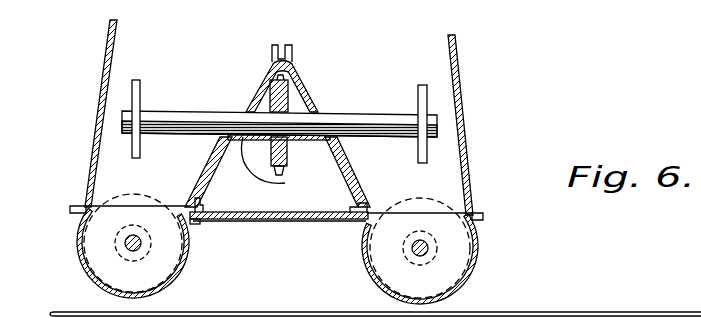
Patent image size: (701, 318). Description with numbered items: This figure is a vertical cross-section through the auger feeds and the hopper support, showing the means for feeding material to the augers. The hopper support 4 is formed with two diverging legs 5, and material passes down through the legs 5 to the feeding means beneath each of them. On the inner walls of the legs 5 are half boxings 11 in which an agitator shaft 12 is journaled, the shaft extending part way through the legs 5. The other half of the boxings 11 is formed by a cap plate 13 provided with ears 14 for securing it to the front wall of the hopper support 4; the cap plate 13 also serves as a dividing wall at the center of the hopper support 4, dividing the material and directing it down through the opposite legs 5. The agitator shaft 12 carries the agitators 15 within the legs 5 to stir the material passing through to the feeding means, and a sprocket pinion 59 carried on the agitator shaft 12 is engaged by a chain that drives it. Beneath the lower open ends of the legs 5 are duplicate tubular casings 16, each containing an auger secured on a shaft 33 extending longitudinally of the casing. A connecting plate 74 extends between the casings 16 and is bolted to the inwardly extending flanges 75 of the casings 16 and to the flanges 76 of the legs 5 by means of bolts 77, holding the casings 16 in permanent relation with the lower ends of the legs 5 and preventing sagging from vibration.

The hopper support 4 is at (135, 113).
The diverging legs 5 is at (276, 172).
The half boxings 11 is at (269, 168).
The agitator shaft 12 is at (215, 101).
The cap plate 13 is at (306, 93).
The ears 14 is at (293, 52).
The agitators 15 is at (131, 146).
The tubular casings 16 is at (49, 270).
The shaft 33 is at (140, 247).
The sprocket pinion 59 is at (286, 158).
The connecting plate 74 is at (288, 222).
The inwardly extending flanges 75 is at (196, 223).
The flanges 76 is at (203, 207).
The bolts 77 is at (361, 222).